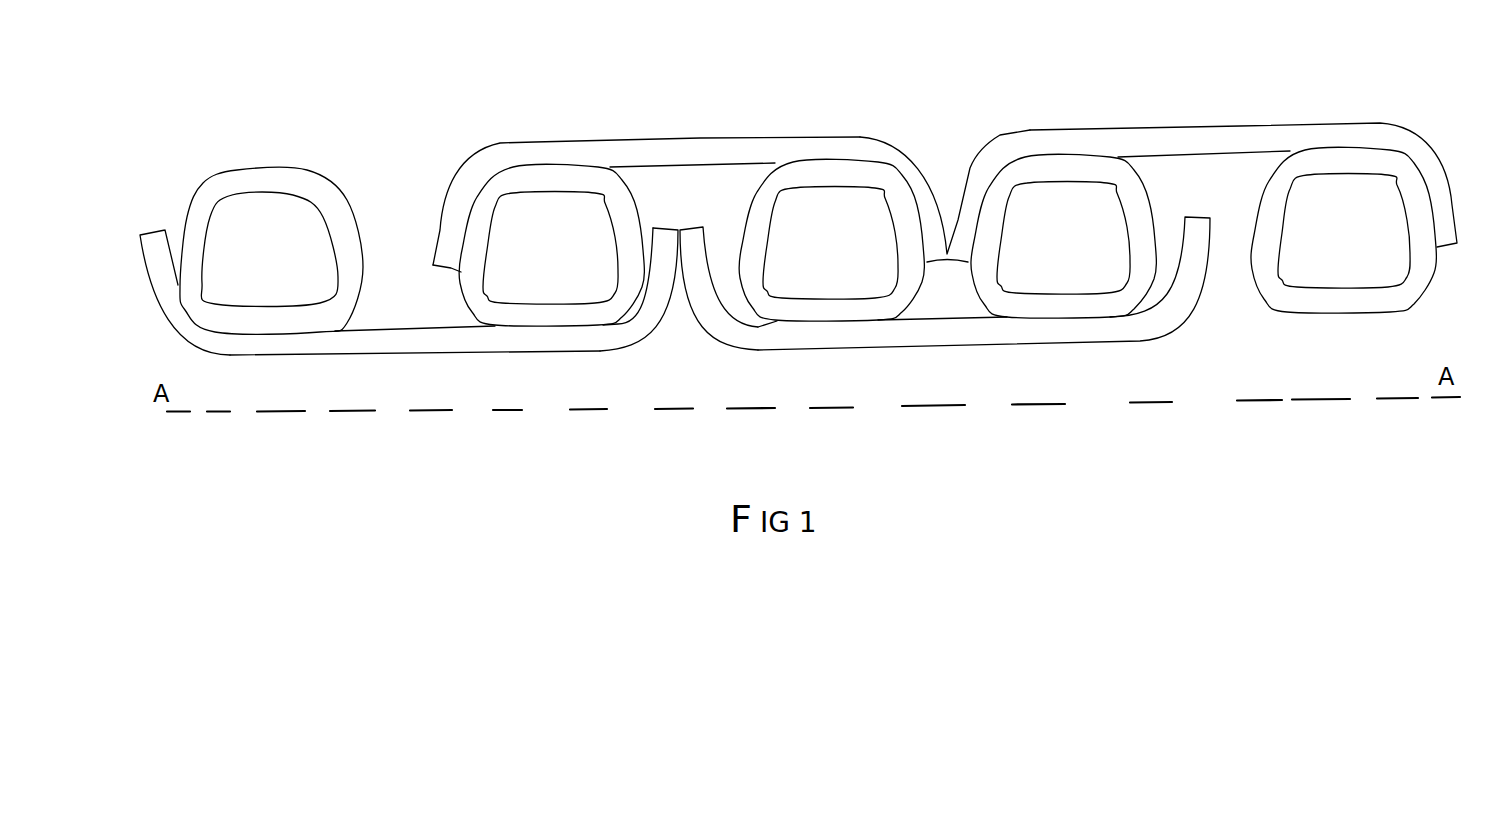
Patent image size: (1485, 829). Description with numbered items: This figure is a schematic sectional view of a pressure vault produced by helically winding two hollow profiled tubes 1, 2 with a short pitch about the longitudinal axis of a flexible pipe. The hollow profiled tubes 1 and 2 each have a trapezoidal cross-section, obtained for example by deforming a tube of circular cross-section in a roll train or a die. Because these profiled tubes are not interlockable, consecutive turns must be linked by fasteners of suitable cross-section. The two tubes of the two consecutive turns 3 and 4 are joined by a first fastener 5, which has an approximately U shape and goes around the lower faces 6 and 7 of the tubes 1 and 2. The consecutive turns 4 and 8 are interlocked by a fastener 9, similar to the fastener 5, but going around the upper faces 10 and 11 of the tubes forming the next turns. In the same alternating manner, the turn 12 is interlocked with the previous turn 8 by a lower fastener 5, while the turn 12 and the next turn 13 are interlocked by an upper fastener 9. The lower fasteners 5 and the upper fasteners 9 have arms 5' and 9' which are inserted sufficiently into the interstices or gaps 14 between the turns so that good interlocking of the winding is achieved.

The hollow profiled tube 1 is at (345, 227).
The hollow profiled tube 2 is at (468, 283).
The turn 3 is at (280, 142).
The turn 4 is at (636, 173).
The first fastener 5 is at (415, 365).
The arm 5' is at (679, 305).
The lower face 6 is at (272, 317).
The lower face 7 is at (548, 315).
The turn 8 is at (752, 180).
The fastener 9 is at (945, 163).
The arm 9' is at (951, 165).
The upper face 10 is at (538, 180).
The upper face 11 is at (837, 173).
The turn 12 is at (1160, 175).
The turn 13 is at (1267, 168).
The interstice 14 is at (1214, 303).